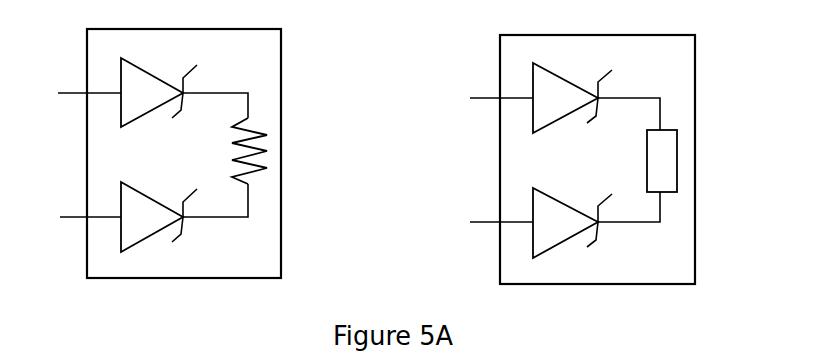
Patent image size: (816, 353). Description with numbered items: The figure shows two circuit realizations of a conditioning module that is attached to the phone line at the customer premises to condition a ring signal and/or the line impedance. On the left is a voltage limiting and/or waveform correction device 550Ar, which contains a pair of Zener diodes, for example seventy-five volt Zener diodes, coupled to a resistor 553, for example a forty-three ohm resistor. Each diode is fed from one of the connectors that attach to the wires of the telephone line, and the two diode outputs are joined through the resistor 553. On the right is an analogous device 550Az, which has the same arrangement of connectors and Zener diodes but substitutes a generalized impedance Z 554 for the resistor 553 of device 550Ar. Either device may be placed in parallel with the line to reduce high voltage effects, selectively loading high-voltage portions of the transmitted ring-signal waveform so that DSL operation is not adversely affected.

The voltage limiting and/or waveform correction device 550Ar is at (281, 152).
The analogous device 550Az is at (695, 160).
The resistor 553 is at (252, 186).
The generalized impedance Z 554 is at (670, 195).